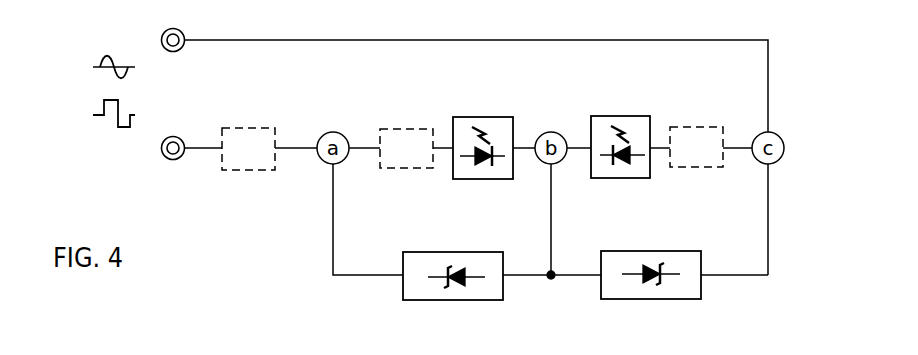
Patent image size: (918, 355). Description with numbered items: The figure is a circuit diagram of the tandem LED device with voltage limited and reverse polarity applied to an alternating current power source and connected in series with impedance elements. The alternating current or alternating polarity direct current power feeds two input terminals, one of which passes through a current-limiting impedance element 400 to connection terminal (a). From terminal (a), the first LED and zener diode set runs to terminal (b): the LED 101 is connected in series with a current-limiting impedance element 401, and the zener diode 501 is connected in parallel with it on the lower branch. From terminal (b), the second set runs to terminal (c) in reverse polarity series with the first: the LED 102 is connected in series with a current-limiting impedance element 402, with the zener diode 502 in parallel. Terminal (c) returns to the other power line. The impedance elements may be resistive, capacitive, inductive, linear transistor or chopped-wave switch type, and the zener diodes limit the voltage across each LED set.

The current-limiting impedance element 400 is at (240, 128).
The current-limiting impedance element 401 is at (393, 129).
The current-limiting impedance element 402 is at (687, 127).
The LED 101 is at (475, 117).
The LED 102 is at (605, 116).
The zener diode 501 is at (433, 252).
The zener diode 502 is at (630, 251).